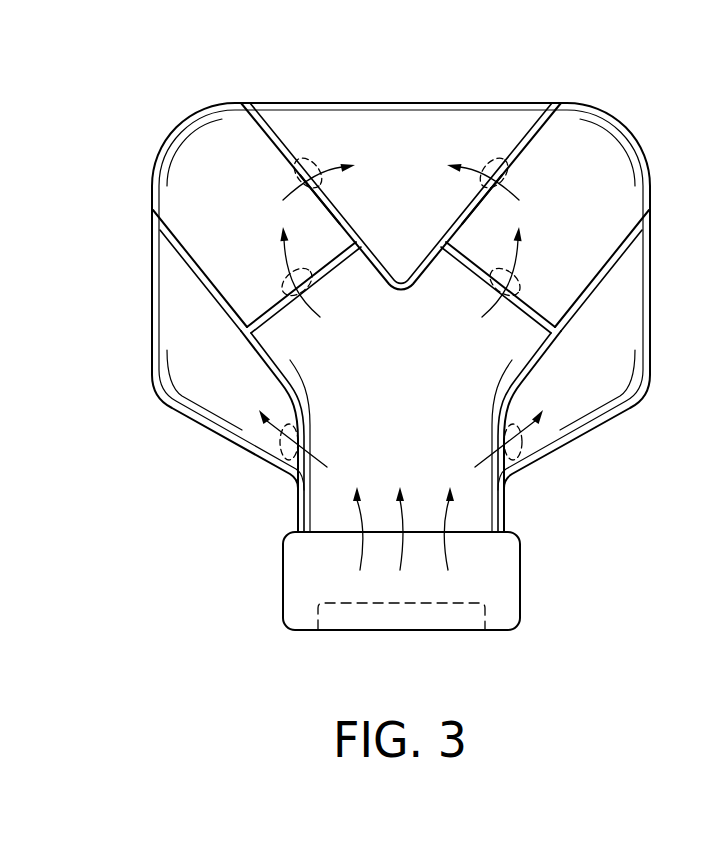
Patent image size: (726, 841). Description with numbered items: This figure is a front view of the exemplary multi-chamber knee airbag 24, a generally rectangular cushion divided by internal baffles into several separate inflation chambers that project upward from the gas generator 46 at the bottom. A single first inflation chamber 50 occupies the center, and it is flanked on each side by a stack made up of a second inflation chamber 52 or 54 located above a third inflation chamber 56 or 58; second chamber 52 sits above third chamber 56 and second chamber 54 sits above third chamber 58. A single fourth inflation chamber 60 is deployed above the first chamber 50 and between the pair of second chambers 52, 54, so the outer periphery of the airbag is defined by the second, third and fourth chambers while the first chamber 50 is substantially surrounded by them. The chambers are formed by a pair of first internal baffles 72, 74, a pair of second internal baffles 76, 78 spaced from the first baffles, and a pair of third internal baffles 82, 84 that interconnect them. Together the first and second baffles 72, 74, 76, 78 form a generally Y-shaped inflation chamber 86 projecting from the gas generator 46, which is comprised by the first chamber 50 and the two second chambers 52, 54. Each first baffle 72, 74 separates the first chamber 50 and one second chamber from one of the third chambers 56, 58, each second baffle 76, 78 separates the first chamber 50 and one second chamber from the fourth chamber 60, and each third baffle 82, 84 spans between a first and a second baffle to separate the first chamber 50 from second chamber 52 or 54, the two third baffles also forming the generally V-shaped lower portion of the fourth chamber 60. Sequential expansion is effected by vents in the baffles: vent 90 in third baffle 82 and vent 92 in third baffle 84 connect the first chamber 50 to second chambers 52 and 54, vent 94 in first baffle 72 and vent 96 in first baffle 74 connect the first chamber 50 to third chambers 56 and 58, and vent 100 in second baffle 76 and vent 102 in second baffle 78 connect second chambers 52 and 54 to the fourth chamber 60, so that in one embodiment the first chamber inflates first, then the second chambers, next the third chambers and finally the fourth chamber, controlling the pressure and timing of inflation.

The knee airbag 24 is at (411, 74).
The gas generator 46 is at (292, 576).
The first inflation chamber 50 is at (414, 423).
The second inflation chamber 52 is at (246, 218).
The second inflation chamber 54 is at (571, 219).
The third inflation chamber 56 is at (223, 375).
The third inflation chamber 58 is at (599, 377).
The fourth inflation chamber 60 is at (413, 182).
The first internal baffle 72 is at (284, 368).
The first internal baffle 74 is at (518, 368).
The second internal baffle 76 is at (334, 216).
The second internal baffle 78 is at (459, 228).
The third internal baffle 82 is at (347, 249).
The third internal baffle 84 is at (455, 249).
The Y-shaped inflation chamber 86 is at (204, 328).
The vent 90 is at (284, 277).
The vent 92 is at (518, 277).
The vent 94 is at (283, 455).
The vent 96 is at (519, 455).
The vent 100 is at (298, 163).
The vent 102 is at (502, 163).